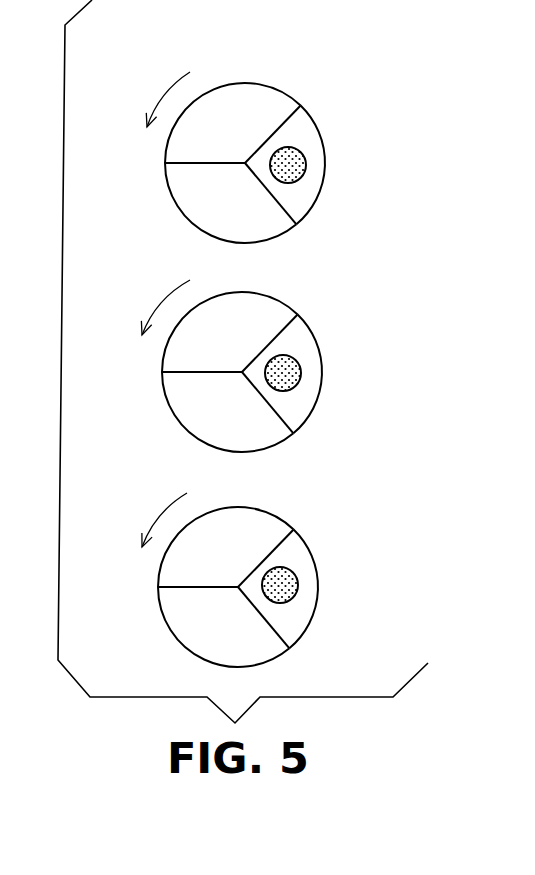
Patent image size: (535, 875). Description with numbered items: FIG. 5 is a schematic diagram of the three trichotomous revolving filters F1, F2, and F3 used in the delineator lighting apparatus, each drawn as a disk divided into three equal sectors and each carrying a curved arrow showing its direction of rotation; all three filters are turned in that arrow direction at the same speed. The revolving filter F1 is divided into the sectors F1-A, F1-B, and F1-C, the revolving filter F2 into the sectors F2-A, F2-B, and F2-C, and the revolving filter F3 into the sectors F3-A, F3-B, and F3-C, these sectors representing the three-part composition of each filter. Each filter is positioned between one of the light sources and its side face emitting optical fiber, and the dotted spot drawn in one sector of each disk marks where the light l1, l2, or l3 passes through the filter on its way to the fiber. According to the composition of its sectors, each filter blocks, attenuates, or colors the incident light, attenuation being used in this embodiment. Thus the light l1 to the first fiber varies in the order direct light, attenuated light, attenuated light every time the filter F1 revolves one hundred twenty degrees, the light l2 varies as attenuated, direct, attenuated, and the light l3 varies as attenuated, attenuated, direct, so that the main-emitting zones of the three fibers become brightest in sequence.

The revolving filter F1 is at (307, 87).
The sector A of frame 1 F1-A is at (305, 188).
The sector B of frame 1 F1-B is at (190, 192).
The sector C of frame 1 F1-C is at (233, 95).
The light l1 is at (303, 160).
The revolving filter F2 is at (317, 315).
The sector A of frame 2 F2-A is at (298, 400).
The sector B of frame 2 F2-B is at (187, 397).
The sector C of frame 2 F2-C is at (233, 322).
The light l2 is at (300, 368).
The revolving filter F3 is at (317, 532).
The sector A of frame 3 F3-A is at (297, 612).
The sector B of frame 3 F3-B is at (197, 618).
The sector C of frame 3 F3-C is at (227, 523).
The light l3 is at (295, 583).